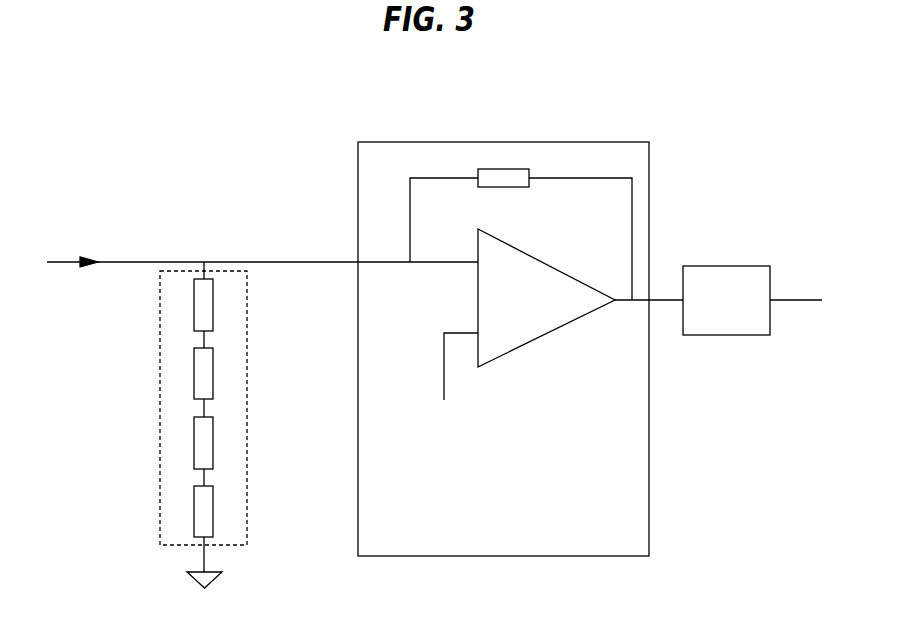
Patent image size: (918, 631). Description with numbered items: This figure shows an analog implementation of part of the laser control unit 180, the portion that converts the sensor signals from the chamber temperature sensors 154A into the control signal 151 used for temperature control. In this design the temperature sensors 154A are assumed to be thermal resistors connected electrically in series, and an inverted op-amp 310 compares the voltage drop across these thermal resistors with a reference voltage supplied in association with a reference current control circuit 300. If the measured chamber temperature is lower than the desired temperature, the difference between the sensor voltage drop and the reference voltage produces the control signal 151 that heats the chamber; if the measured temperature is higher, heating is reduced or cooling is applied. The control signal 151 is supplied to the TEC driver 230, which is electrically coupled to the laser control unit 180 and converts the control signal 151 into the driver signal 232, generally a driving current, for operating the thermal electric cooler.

The reference current control circuit 300 is at (290, 102).
The temperature sensors 154A is at (160, 358).
The laser control unit 180 is at (592, 544).
The inverted op-amp 310 is at (530, 315).
The control signal 151 is at (665, 300).
The TEC driver 230 is at (735, 335).
The driver signal 232 is at (795, 300).